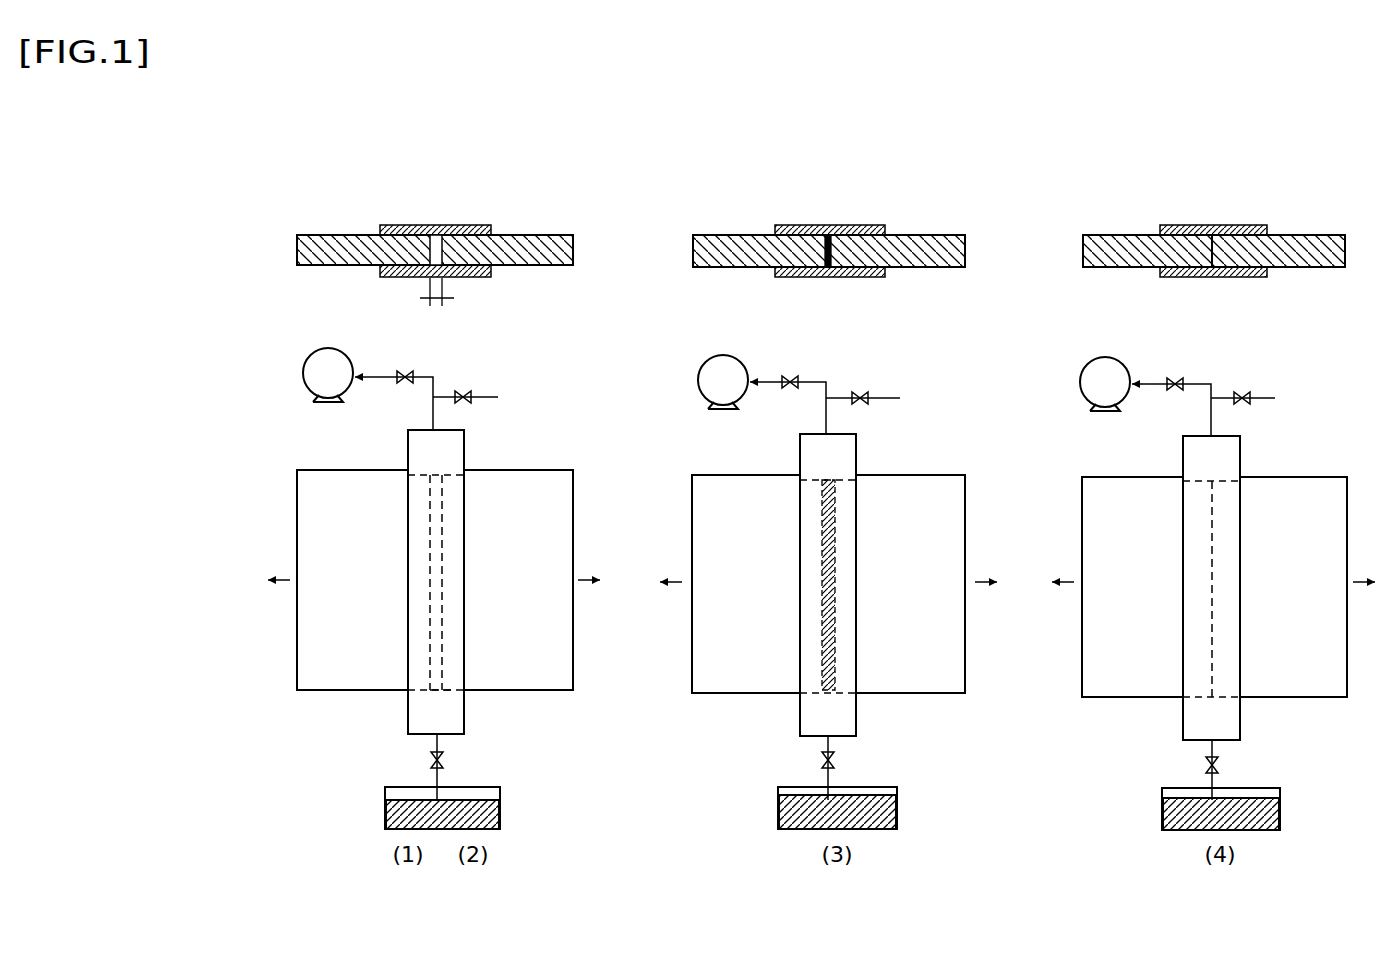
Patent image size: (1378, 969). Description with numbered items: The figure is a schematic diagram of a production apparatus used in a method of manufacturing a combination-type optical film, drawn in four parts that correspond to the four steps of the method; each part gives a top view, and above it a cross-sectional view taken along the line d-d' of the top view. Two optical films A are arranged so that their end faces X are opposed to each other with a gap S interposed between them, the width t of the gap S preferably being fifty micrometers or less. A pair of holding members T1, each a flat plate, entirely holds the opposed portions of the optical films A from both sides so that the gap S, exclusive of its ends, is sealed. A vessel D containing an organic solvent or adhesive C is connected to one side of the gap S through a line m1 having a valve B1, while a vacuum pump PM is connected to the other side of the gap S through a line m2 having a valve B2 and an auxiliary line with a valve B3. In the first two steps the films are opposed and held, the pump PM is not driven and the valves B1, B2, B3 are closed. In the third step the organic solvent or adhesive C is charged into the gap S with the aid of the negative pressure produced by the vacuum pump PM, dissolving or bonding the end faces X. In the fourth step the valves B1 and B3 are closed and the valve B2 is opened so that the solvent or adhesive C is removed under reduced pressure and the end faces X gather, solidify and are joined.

The optical film A is at (318, 272).
The holding member T1 is at (478, 226).
The gap S is at (437, 240).
The width of the gap t is at (437, 304).
The end face X is at (425, 234).
The organic solvent or adhesive C is at (829, 270).
The vessel D is at (500, 790).
The vacuum pump PM is at (303, 375).
The line m2 is at (437, 378).
The valve B2 is at (408, 386).
The valve B3 is at (475, 394).
The line m1 is at (440, 745).
The valve B1 is at (428, 760).
The section line end d' is at (670, 595).
The section line end d is at (976, 595).